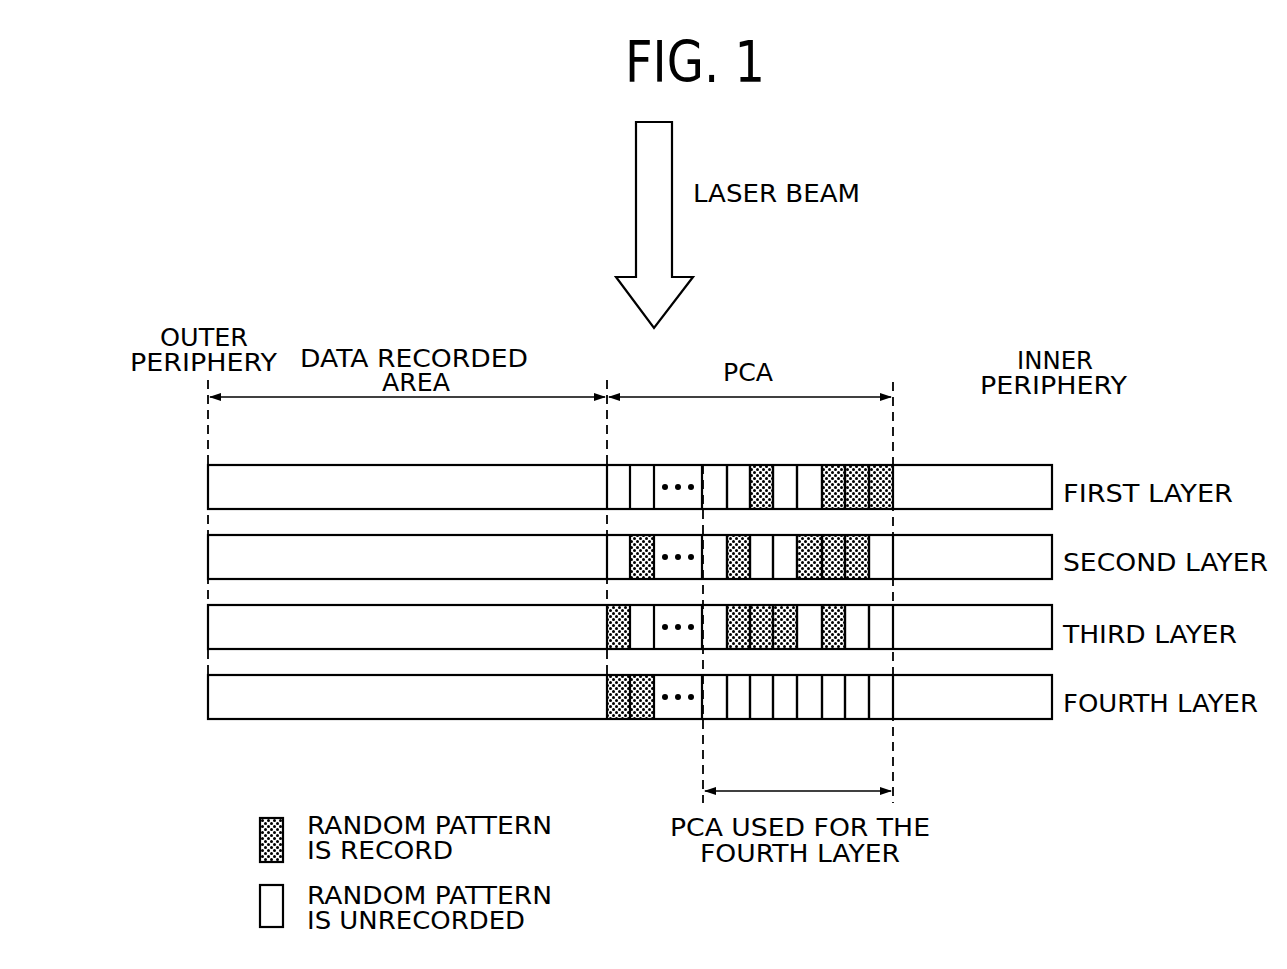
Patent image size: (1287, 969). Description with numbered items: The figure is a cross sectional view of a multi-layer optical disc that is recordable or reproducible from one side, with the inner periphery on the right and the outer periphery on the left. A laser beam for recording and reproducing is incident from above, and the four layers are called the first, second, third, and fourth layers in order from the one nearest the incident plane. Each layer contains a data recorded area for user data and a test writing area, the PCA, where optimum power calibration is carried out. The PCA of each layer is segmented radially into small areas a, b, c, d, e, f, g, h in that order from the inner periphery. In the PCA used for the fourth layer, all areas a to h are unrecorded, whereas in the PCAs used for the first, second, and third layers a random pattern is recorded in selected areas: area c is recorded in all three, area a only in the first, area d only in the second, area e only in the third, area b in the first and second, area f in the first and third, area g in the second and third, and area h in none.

The area a is at (881, 616).
The area b is at (857, 616).
The area c is at (833, 616).
The area d is at (809, 616).
The area e is at (785, 616).
The area f is at (761, 616).
The area g is at (738, 616).
The area h is at (714, 616).